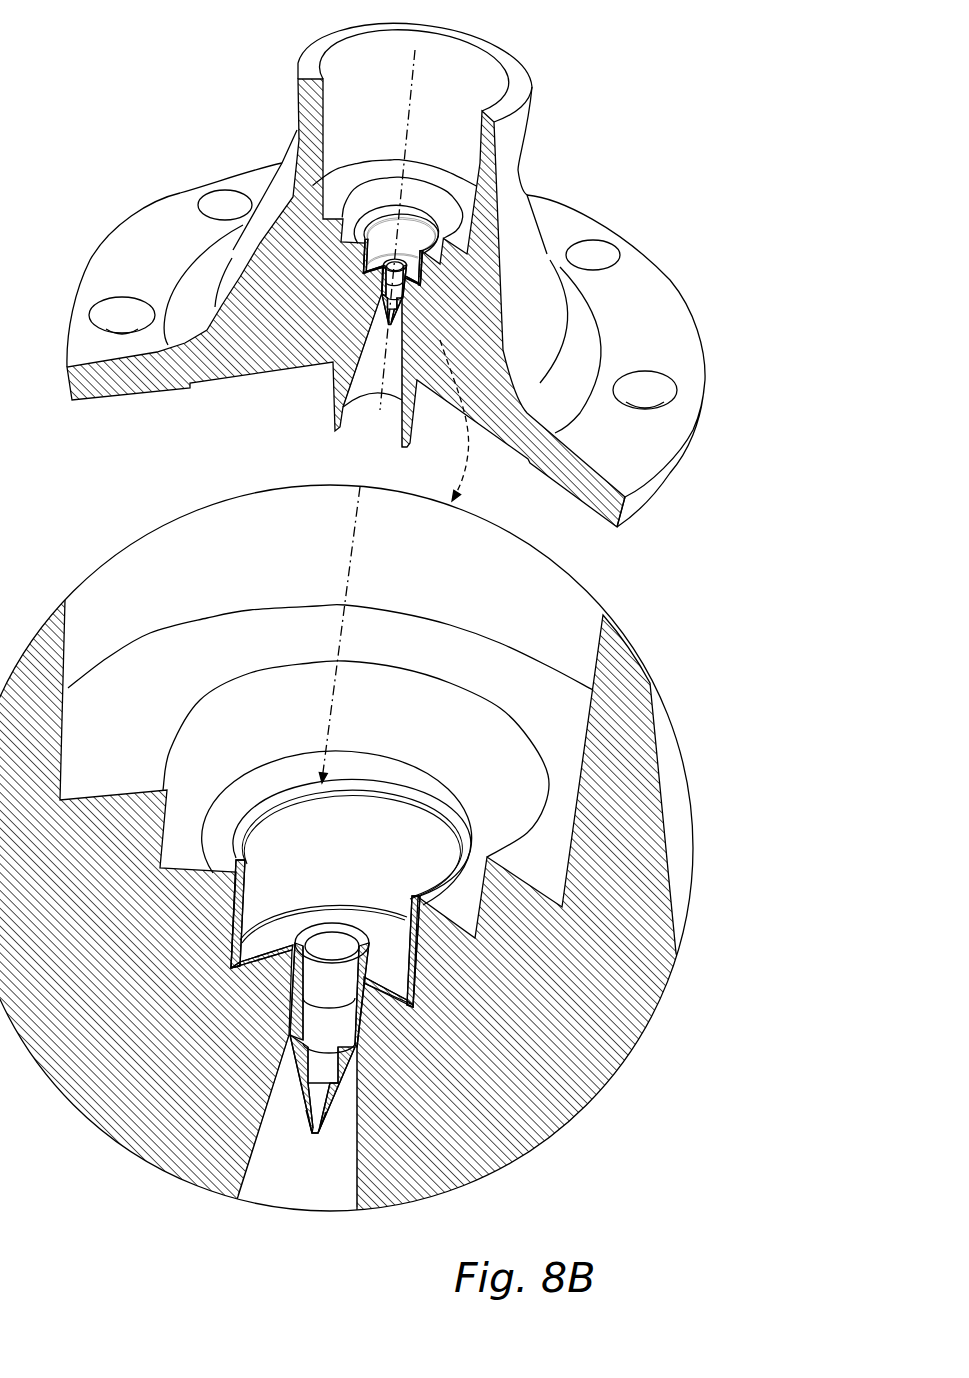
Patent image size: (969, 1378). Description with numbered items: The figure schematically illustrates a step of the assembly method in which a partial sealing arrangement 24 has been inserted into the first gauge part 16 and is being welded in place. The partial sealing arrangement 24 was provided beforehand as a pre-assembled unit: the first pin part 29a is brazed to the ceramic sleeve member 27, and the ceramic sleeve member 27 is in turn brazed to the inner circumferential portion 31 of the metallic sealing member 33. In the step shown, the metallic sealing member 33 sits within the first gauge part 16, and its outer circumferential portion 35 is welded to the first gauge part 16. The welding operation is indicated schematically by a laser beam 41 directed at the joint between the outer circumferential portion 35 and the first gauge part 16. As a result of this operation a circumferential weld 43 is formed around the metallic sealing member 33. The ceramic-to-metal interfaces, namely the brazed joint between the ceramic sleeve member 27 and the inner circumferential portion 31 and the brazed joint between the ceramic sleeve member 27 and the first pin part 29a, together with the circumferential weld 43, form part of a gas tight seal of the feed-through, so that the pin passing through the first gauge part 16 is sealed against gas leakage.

The first gauge part 16 is at (525, 217).
The partial sealing arrangement 24 is at (293, 1143).
The laser beam 41 is at (353, 588).
The outer circumferential portion 35 is at (230, 846).
The circumferential weld 43 is at (447, 887).
The metallic sealing member 33 is at (257, 890).
The inner circumferential portion 31 is at (370, 999).
The ceramic sleeve member 27 is at (356, 1028).
The first pin part 29a is at (320, 1136).